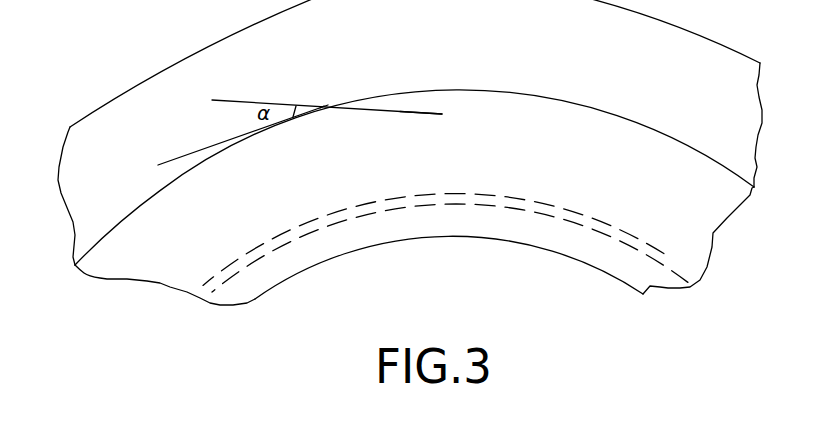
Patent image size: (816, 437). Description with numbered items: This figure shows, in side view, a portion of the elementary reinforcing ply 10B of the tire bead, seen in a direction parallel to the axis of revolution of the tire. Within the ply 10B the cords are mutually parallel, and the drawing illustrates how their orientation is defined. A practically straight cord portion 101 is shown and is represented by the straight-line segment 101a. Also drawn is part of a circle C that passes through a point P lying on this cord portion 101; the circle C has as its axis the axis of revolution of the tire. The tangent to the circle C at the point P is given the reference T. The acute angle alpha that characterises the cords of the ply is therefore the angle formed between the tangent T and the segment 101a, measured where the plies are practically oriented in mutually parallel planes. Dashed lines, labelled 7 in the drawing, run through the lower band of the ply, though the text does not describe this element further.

The cord portion 101 is at (233, 100).
The straight-line segment 101a is at (442, 114).
The point P is at (324, 105).
The circle C is at (650, 128).
The tangent T is at (177, 157).
The cords 7 is at (450, 207).
The elementary ply 10B is at (687, 240).